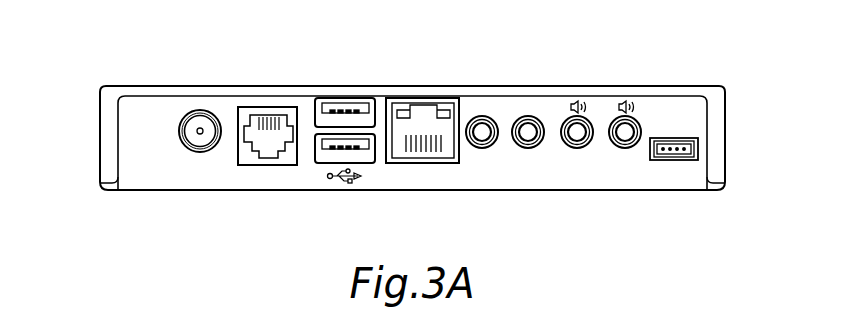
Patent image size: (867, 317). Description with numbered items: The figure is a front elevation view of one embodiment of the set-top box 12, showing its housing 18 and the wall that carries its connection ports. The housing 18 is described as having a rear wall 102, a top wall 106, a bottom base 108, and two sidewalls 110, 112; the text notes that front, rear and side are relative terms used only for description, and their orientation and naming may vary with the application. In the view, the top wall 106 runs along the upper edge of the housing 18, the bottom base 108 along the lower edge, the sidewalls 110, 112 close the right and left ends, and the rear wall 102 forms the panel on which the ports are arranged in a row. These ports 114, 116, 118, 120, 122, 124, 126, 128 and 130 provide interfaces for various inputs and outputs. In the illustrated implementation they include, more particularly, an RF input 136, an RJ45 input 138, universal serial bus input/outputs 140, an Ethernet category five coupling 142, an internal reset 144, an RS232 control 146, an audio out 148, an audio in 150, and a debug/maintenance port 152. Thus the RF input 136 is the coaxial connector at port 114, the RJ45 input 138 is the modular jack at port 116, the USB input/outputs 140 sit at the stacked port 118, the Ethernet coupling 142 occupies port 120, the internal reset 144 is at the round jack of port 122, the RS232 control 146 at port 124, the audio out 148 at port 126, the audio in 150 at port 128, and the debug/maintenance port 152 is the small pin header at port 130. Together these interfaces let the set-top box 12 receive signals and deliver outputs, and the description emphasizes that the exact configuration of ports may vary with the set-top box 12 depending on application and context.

The set-top box 12 is at (105, 68).
The housing 18 is at (706, 78).
The rear wall 102 is at (137, 185).
The top wall 106 is at (168, 85).
The bottom base 108 is at (287, 191).
The sidewall 110 is at (725, 127).
The sidewall 112 is at (100, 130).
The port 114 is at (200, 110).
The port 116 is at (269, 107).
The port 118 is at (348, 104).
The port 120 is at (424, 104).
The port 122 is at (481, 116).
The port 124 is at (530, 116).
The port 126 is at (578, 116).
The port 128 is at (627, 116).
The port 130 is at (672, 160).
The RF input 136 is at (199, 152).
The RJ45 input 138 is at (255, 165).
The universal serial bus (USB) input/outputs 140 is at (342, 164).
The Ethernet category 5 (Cat 5) coupling 142 is at (425, 163).
The internal reset 144 is at (483, 148).
The RS232 control 146 is at (530, 148).
The audio out 148 is at (578, 148).
The audio in 150 is at (627, 148).
The debug/maintenance port 152 is at (698, 156).